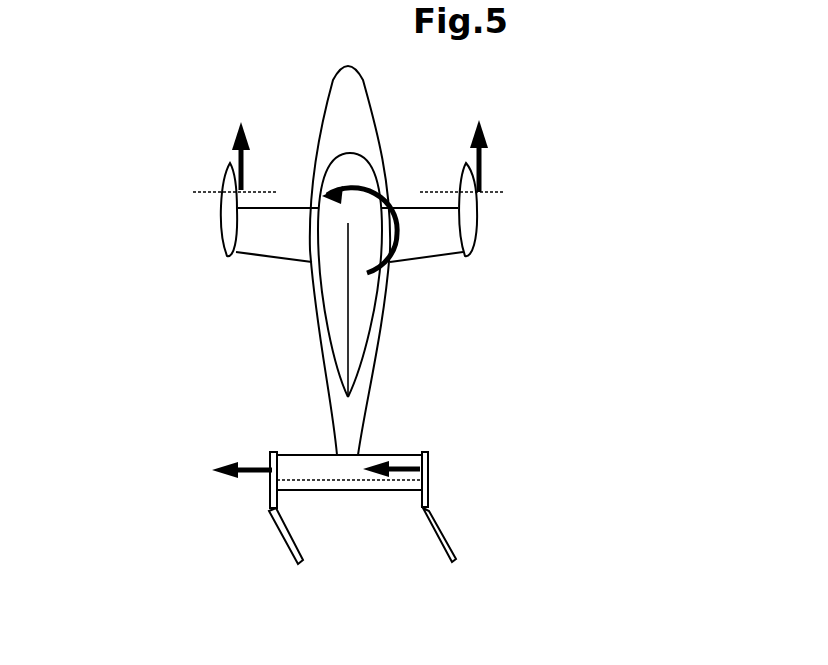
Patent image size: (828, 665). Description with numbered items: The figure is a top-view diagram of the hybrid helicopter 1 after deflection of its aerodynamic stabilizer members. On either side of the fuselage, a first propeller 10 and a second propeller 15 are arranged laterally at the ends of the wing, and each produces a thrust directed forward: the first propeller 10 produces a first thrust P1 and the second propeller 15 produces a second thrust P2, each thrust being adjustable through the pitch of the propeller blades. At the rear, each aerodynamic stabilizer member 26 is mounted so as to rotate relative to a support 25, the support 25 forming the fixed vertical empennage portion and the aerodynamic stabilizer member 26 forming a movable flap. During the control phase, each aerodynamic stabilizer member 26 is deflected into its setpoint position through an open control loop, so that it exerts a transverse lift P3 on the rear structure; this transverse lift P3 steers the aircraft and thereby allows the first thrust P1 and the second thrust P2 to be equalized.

The hybrid helicopter 1 is at (486, 306).
The first propeller 10 is at (186, 211).
The second propeller 15 is at (505, 212).
The support 25 is at (273, 450).
The aerodynamic stabilizer member 26 is at (278, 530).
The first thrust P1 is at (221, 156).
The second thrust P2 is at (497, 156).
The transverse lift P3 is at (308, 450).